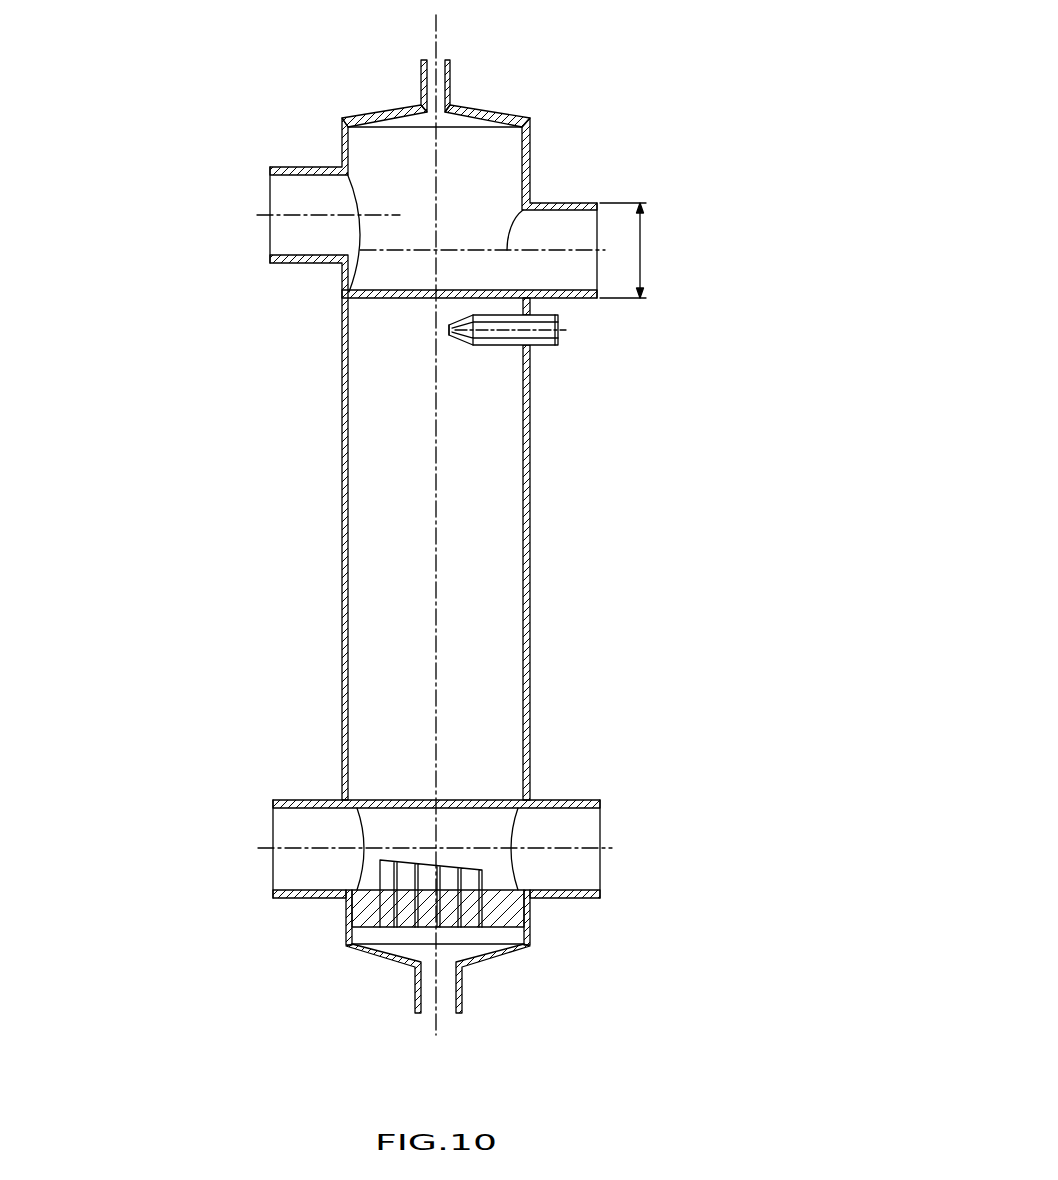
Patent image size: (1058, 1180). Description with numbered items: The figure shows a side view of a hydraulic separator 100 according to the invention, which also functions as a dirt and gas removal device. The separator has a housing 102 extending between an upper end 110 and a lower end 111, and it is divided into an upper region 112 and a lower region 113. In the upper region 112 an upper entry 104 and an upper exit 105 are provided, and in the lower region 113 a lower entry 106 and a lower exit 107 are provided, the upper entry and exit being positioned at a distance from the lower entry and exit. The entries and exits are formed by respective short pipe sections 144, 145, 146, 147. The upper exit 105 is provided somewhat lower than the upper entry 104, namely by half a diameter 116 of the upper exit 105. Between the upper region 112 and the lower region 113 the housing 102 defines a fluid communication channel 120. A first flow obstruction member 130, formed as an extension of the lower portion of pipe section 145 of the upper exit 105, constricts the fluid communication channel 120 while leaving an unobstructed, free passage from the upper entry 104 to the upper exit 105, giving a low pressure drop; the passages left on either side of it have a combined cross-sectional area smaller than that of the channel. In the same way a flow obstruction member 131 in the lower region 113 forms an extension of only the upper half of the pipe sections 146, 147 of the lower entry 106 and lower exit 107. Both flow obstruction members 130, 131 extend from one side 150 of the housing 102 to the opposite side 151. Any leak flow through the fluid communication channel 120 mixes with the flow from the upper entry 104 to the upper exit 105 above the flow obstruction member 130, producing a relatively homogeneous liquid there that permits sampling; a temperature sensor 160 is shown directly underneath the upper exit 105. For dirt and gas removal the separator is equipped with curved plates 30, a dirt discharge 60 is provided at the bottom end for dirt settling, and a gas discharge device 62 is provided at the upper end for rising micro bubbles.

The hydraulic separator 100 is at (675, 393).
The housing 102 is at (340, 510).
The upper entry 104 is at (297, 165).
The upper exit 105 is at (590, 200).
The lower entry 106 is at (588, 812).
The lower exit 107 is at (290, 800).
The upper end 110 is at (357, 117).
The lower end 111 is at (348, 947).
The upper region 112 is at (567, 80).
The lower region 113 is at (560, 773).
The diameter of the upper exit 116 is at (647, 250).
The fluid communication channel 120 is at (405, 573).
The first flow obstruction member 130 is at (375, 297).
The flow obstruction member 131 is at (380, 800).
The short pipe section 144 is at (298, 265).
The short pipe section 145 is at (542, 200).
The short pipe section 146 is at (590, 898).
The short pipe section 147 is at (292, 898).
The one side of the housing 150 is at (530, 482).
The opposite side of the housing 151 is at (340, 463).
The temperature sensor 160 is at (541, 348).
The curved plates 30 is at (350, 935).
The dirt discharge 60 is at (462, 1010).
The gas discharge device 62 is at (450, 73).